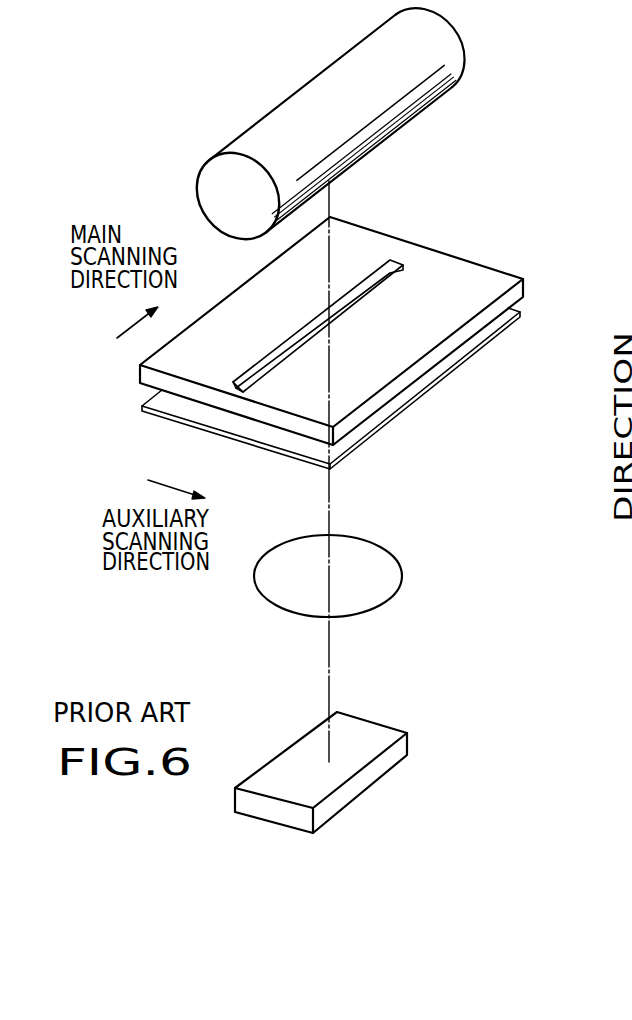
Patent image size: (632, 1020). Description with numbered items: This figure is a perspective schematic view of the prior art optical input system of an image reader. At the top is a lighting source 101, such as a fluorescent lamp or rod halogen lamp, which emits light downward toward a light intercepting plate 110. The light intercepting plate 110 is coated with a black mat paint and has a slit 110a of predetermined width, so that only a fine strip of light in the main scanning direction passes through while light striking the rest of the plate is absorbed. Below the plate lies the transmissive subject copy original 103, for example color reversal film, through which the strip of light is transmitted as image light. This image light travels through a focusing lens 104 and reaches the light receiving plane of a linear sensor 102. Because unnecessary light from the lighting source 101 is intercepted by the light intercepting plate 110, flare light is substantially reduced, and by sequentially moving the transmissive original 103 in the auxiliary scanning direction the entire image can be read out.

The lighting source 101 is at (365, 157).
The light intercepting plate 110 is at (475, 338).
The slit 110a is at (237, 388).
The transmissive subject copy original 103 is at (410, 403).
The focusing lens 104 is at (402, 573).
The linear sensor 102 is at (407, 732).